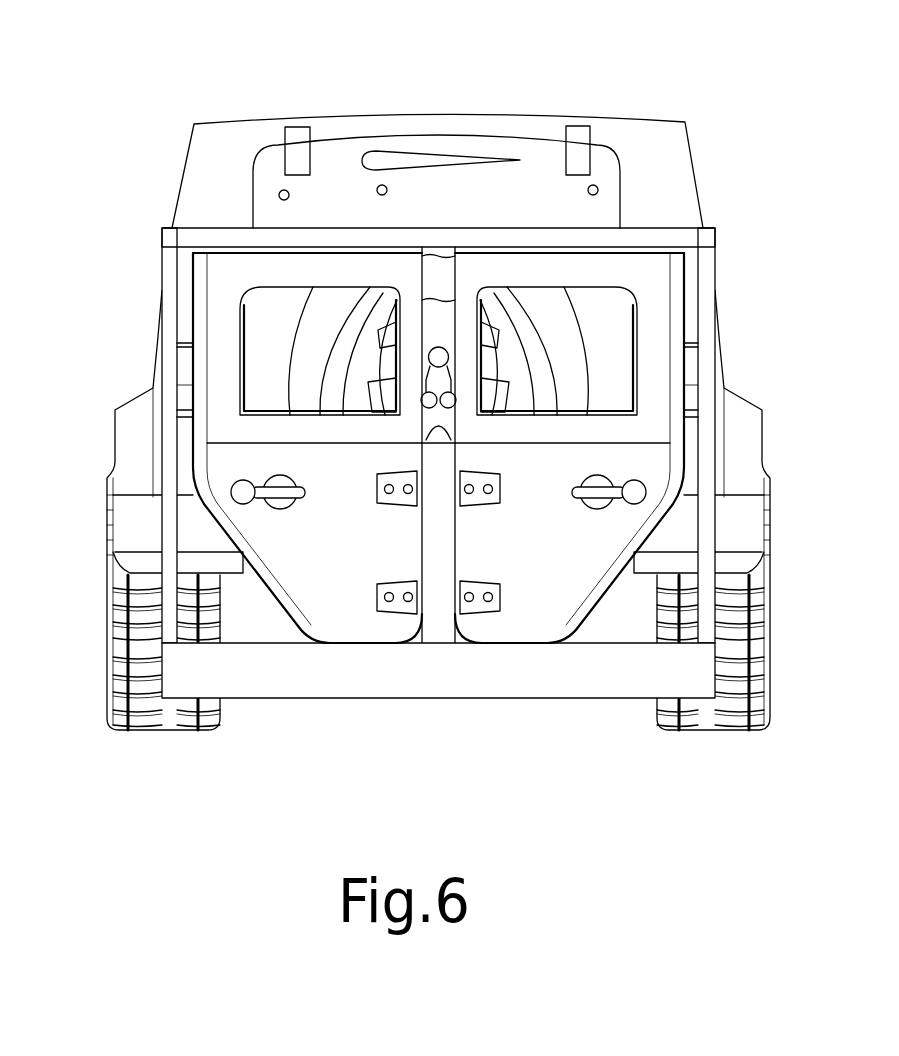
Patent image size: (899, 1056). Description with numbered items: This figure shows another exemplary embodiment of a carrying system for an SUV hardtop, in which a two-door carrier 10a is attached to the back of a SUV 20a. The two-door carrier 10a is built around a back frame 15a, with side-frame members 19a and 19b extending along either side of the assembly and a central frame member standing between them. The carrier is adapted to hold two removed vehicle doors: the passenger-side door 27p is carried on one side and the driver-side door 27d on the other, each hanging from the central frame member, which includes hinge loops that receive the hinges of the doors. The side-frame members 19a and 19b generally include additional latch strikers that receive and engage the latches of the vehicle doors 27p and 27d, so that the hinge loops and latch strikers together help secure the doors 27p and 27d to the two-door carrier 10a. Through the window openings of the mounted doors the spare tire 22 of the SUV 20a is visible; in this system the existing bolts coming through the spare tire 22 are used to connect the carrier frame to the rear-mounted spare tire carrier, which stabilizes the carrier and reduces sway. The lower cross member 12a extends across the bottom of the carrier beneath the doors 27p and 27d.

The two-door carrier 10a is at (155, 256).
The rear bumper 12a is at (597, 687).
The back frame 15a is at (337, 240).
The side-frame member 19a is at (170, 372).
The side-frame member 19b is at (707, 292).
The SUV 20a is at (663, 117).
The spare tire 22 is at (312, 343).
The passenger-side door 27p is at (328, 600).
The driver-side door 27d is at (507, 622).